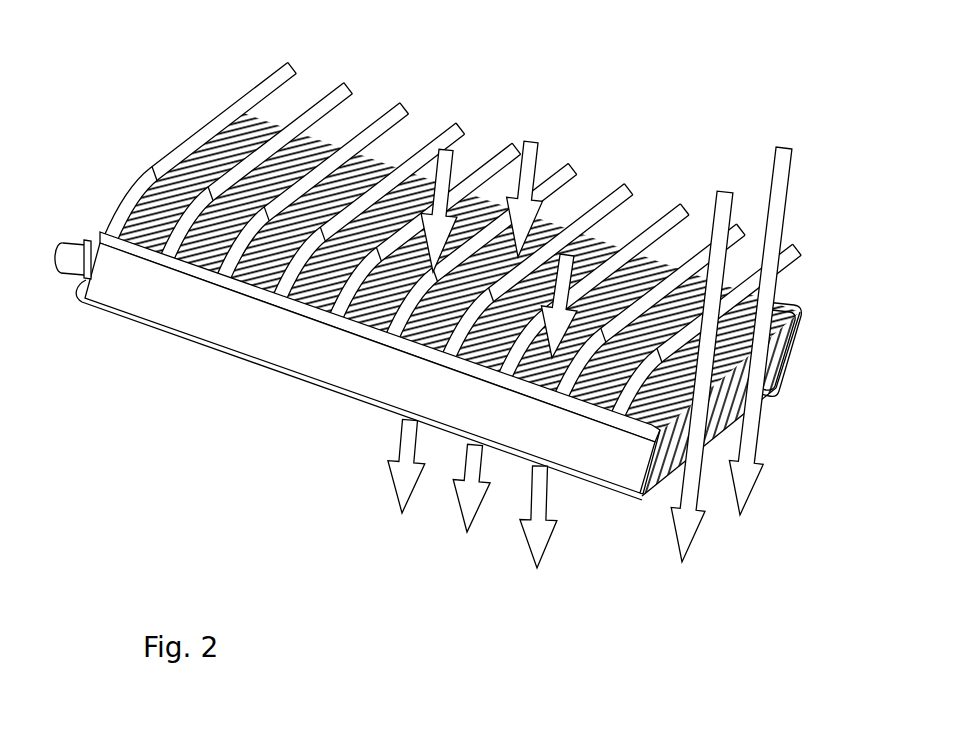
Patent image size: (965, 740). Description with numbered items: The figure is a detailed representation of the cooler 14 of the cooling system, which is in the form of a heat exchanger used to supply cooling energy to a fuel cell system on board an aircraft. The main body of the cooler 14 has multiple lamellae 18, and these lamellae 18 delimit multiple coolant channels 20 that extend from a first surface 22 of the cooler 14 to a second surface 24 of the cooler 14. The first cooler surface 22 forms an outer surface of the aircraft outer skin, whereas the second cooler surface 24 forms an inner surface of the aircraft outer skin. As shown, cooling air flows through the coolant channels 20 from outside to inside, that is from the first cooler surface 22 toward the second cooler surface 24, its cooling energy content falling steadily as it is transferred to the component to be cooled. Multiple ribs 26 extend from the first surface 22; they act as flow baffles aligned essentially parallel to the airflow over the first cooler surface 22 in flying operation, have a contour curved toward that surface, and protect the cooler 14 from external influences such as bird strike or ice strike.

The cooler 14 is at (495, 315).
The lamellae 18 is at (800, 308).
The coolant channels 20 is at (797, 355).
The first surface 22 is at (598, 391).
The second surface 24 is at (278, 373).
The ribs 26 is at (631, 200).